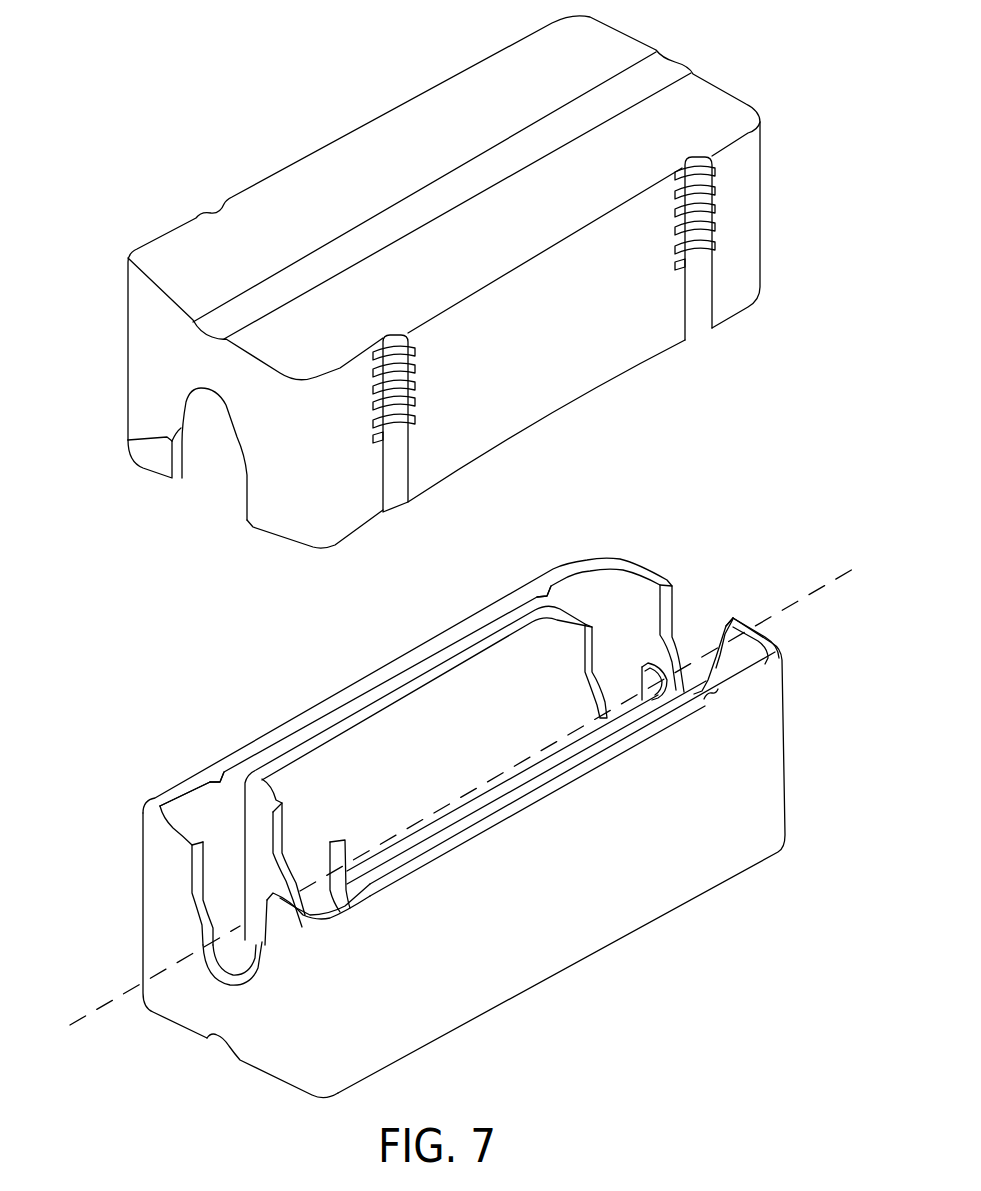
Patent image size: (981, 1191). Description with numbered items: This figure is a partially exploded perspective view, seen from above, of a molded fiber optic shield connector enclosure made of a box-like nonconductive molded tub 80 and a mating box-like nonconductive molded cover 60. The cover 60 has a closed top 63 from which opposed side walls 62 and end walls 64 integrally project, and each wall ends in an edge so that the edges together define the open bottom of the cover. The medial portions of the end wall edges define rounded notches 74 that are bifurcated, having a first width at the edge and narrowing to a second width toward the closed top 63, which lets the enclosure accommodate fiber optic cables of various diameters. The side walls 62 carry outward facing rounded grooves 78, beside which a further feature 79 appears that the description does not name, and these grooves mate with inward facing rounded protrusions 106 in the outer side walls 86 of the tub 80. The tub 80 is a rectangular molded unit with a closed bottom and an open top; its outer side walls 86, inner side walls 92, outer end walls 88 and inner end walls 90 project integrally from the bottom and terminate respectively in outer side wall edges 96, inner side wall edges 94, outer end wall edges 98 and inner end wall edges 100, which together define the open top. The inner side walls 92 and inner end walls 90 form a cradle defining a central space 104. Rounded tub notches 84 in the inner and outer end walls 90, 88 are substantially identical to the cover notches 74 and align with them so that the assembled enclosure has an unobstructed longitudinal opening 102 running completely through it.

The cover 60 is at (365, 89).
The side walls 62 is at (567, 320).
The closed top 63 is at (460, 132).
The end walls 64 is at (200, 357).
The notches 74 is at (133, 440).
The rounded grooves 78 is at (400, 506).
The ribs on latch post 79 is at (371, 387).
The tub 80 is at (505, 1027).
The tub notches 84 is at (670, 605).
The outer side walls 86 is at (595, 863).
The outer end walls 88 is at (263, 997).
The inner end walls 90 is at (260, 857).
The inner side walls 92 is at (440, 710).
The inner side wall edges 94 is at (300, 747).
The outer side wall edges 96 is at (675, 727).
The outer end wall edges 98 is at (185, 838).
The inner end wall edges 100 is at (343, 907).
The longitudinal opening 102 is at (450, 797).
The central space 104 is at (485, 710).
The rounded protrusions 106 is at (217, 777).